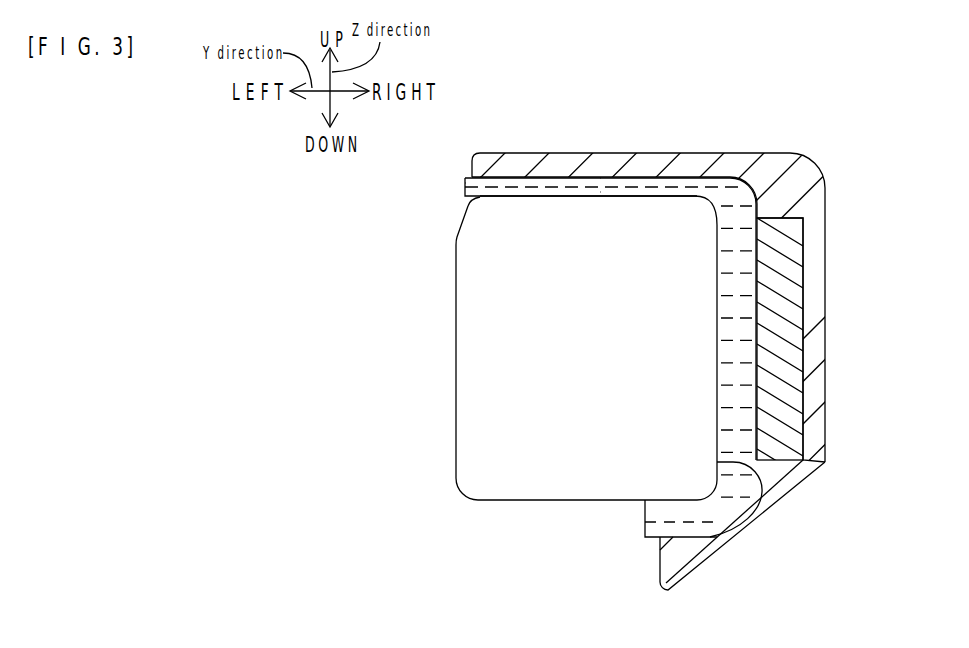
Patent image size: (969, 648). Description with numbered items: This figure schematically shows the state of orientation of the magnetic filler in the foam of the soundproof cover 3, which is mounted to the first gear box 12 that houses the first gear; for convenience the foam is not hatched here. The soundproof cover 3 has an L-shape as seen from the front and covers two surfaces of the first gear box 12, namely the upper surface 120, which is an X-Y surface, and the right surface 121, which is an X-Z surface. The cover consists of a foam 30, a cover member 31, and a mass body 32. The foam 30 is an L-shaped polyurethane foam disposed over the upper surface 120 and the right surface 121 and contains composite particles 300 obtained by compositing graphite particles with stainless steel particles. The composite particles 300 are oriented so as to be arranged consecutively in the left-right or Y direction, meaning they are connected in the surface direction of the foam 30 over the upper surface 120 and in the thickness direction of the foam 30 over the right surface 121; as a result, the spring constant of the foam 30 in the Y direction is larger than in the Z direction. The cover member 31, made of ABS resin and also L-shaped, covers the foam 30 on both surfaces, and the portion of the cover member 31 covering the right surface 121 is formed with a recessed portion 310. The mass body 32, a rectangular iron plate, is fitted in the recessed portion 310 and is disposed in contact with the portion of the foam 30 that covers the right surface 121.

The soundproof cover 3 is at (825, 147).
The first gear box 12 is at (480, 269).
The upper surface 120 is at (528, 197).
The right surface 121 is at (746, 462).
The foam 30 is at (615, 187).
The composite particles 300 is at (701, 187).
The cover member 31 is at (735, 163).
The recessed portion 310 is at (804, 232).
The mass body 32 is at (793, 350).